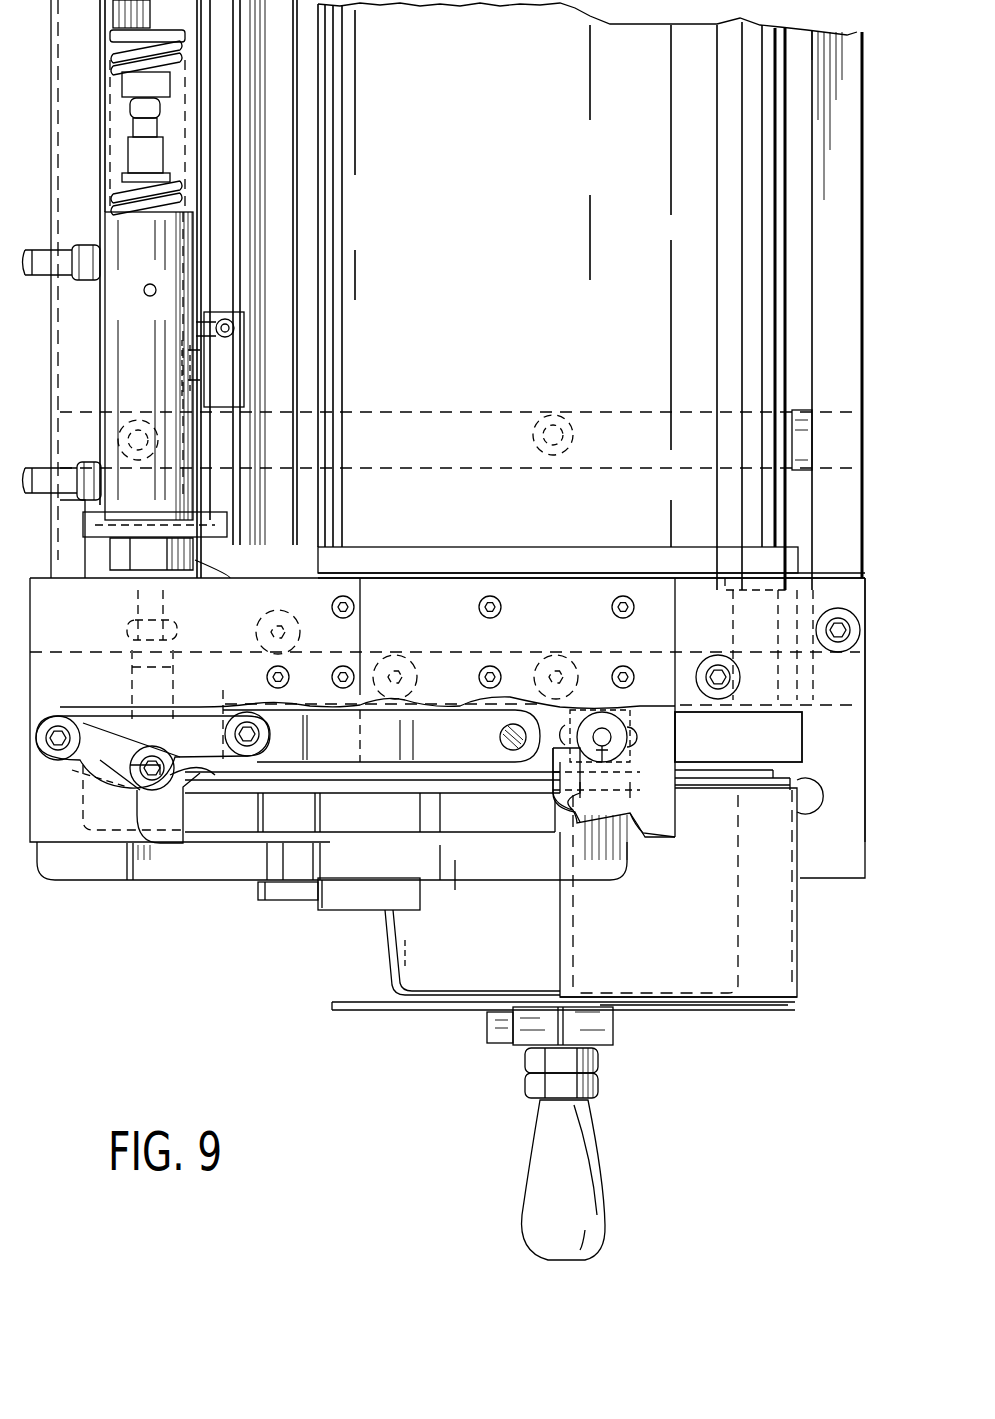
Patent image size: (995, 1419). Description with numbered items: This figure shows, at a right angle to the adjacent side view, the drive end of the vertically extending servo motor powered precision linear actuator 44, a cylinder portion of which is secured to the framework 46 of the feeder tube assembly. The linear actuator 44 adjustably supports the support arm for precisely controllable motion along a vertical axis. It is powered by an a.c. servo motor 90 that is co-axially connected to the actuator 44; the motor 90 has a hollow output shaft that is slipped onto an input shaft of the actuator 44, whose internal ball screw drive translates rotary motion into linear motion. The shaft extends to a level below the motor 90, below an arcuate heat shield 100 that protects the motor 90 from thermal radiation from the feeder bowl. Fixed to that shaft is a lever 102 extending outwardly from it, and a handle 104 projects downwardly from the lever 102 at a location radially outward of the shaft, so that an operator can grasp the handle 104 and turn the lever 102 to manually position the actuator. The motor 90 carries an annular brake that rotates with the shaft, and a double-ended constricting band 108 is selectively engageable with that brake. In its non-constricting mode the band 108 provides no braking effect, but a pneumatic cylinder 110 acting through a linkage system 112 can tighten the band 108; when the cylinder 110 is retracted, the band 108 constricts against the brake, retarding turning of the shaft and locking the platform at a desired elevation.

The linear actuator 44 is at (643, 257).
The framework 46 is at (873, 850).
The servo motor 90 is at (420, 942).
The heat shield 100 is at (797, 975).
The lever 102 is at (613, 1030).
The handle 104 is at (605, 1195).
The constricting band 108 is at (720, 747).
The pneumatic cylinder 110 is at (149, 366).
The linkage system 112 is at (163, 797).